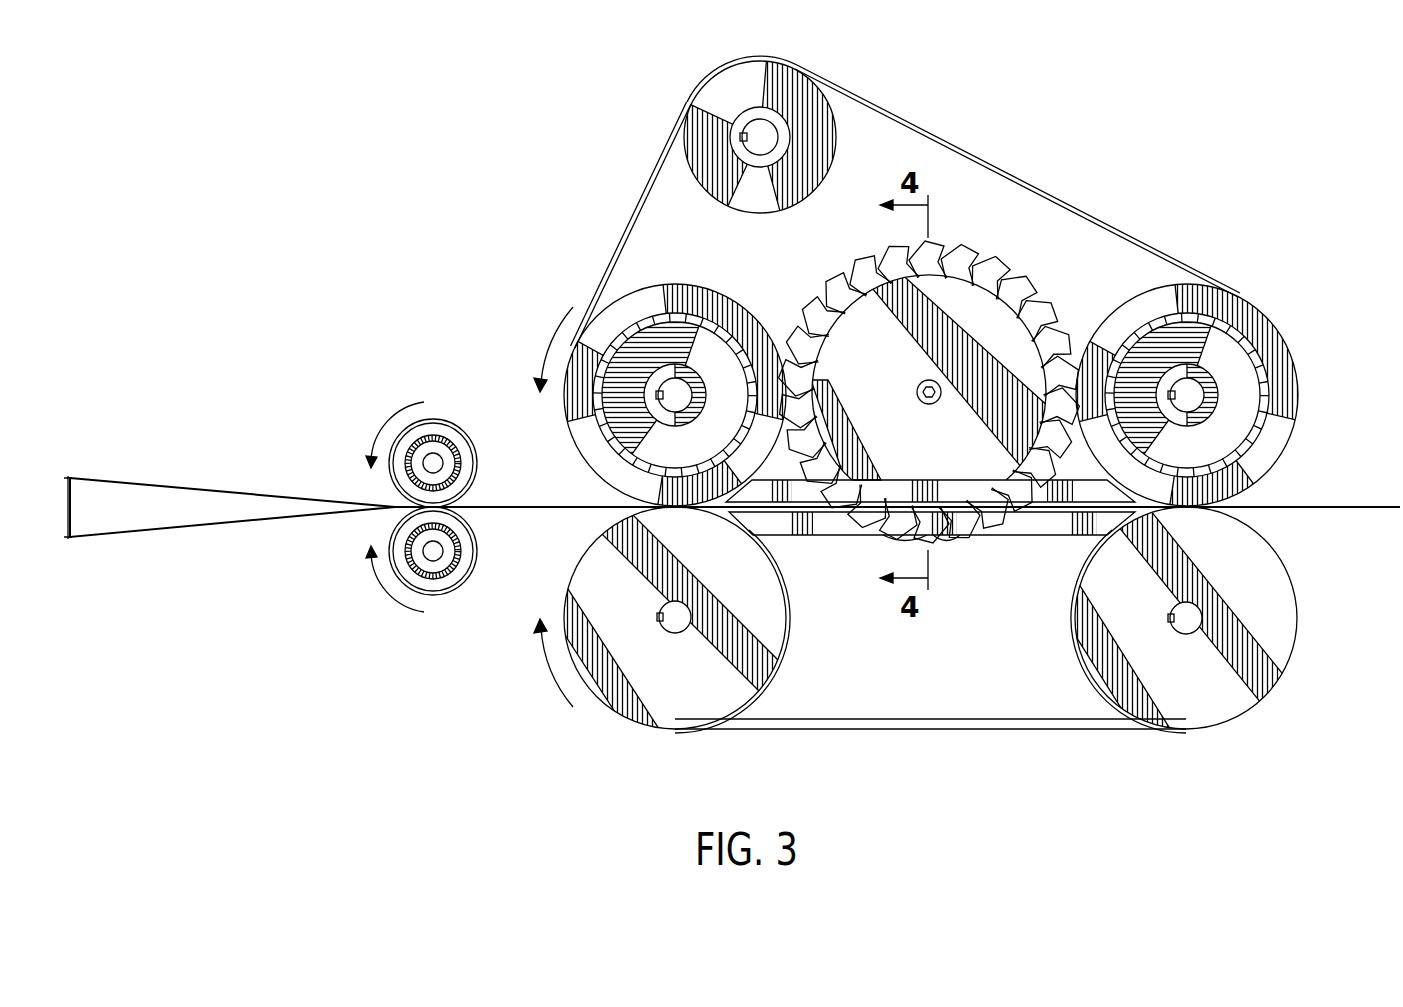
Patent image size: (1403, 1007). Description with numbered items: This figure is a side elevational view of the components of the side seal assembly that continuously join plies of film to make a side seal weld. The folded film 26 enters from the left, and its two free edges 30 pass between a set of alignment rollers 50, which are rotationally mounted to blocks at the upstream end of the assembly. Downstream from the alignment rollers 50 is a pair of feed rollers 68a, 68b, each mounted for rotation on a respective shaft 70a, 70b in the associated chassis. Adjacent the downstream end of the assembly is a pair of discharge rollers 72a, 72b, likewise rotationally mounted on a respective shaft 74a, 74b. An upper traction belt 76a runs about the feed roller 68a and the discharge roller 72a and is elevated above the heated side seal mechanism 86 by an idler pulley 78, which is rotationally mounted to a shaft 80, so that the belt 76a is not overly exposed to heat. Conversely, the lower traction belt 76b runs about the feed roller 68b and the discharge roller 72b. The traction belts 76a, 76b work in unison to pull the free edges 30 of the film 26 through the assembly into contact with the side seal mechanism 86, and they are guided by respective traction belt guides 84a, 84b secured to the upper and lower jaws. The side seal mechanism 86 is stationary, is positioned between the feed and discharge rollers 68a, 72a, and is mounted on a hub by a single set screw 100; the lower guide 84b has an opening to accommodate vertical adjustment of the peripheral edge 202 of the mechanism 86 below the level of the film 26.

The film 26 is at (155, 522).
The free edge 30 is at (286, 515).
The alignment rollers 50 is at (477, 452).
The idler pulley 78 is at (719, 78).
The shaft 80 is at (762, 137).
The traction belt 76a is at (1072, 213).
The feed roller 68a is at (593, 478).
The shaft 70a is at (676, 392).
The discharge roller 72a is at (1272, 325).
The shaft 74a is at (1188, 392).
The side seal mechanism 86 is at (963, 300).
The peripheral edge 202 is at (832, 290).
The set screw 100 is at (922, 402).
The traction belt guide 84a is at (838, 495).
The traction belt guide 84b is at (1028, 520).
The feed roller 68b is at (648, 726).
The shaft 70b is at (674, 633).
The discharge roller 72b is at (1240, 703).
The shaft 74b is at (1184, 633).
The traction belt 76b is at (905, 732).